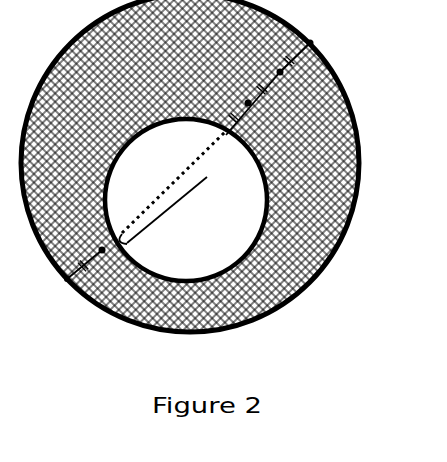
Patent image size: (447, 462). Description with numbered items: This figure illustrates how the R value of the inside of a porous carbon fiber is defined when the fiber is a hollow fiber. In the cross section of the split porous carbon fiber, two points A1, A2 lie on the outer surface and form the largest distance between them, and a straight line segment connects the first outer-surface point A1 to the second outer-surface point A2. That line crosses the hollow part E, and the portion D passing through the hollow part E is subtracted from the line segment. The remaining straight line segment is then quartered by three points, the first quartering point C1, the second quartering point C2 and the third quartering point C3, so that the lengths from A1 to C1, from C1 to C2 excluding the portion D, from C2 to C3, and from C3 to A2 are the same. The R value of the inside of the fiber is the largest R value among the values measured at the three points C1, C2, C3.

The first outer-surface point A1 is at (54, 308).
The second outer-surface point A2 is at (348, 29).
The first quartering point C1 is at (75, 241).
The second quartering point C2 is at (274, 109).
The third quartering point C3 is at (264, 53).
The portion passing through the hollow part D is at (227, 131).
The hollow part E is at (186, 200).